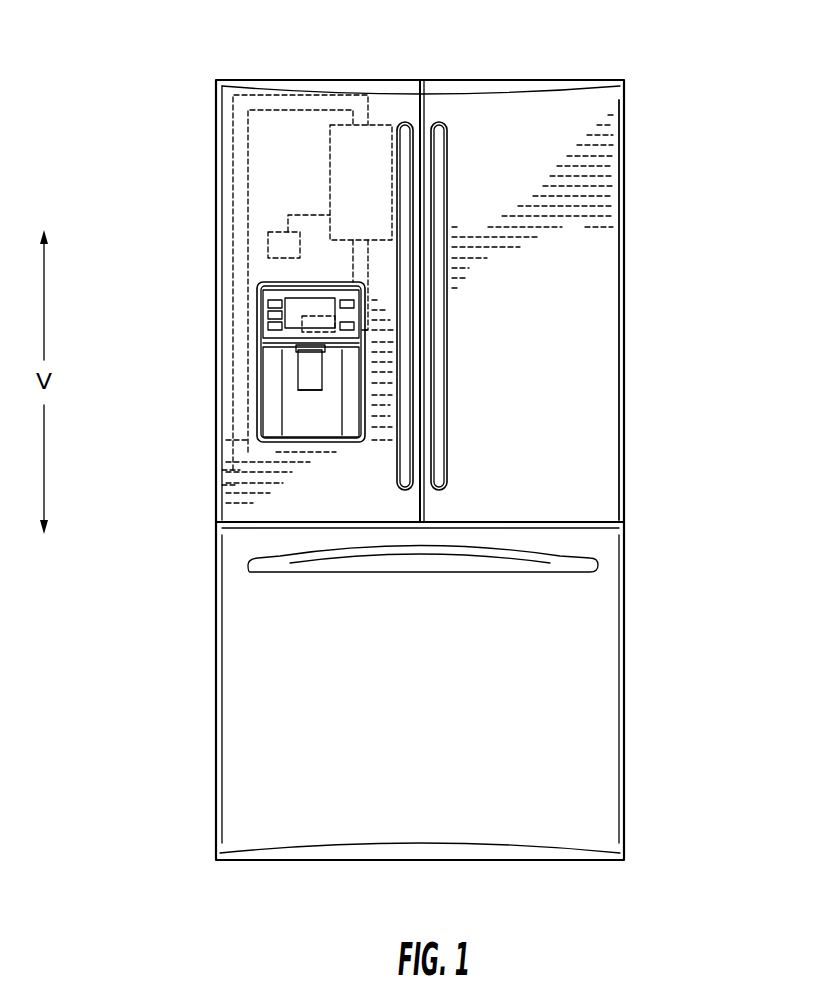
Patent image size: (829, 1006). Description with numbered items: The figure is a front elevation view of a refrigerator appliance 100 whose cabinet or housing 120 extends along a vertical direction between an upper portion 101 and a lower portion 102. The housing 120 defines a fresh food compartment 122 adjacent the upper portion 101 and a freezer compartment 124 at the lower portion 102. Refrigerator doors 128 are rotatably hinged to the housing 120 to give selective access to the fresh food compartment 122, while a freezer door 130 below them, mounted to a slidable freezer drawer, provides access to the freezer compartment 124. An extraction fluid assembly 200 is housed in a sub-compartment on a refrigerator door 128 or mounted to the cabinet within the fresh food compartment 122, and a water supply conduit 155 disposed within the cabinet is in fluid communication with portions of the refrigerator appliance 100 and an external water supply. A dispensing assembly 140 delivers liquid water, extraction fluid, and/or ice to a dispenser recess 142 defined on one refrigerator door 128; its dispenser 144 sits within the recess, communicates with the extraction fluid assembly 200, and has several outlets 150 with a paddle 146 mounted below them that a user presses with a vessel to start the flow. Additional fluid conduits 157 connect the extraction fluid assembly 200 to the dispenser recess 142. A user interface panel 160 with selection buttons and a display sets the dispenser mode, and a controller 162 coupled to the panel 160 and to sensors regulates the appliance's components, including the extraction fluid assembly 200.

The refrigerator appliance 100 is at (132, 99).
The upper portion 101 is at (627, 85).
The lower portion 102 is at (628, 845).
The housing 120 is at (624, 522).
The fresh food compartment 122 is at (566, 378).
The freezer compartment 124 is at (568, 660).
The refrigerator doors 128 is at (258, 157).
The freezer door 130 is at (287, 672).
The dispensing assembly 140 is at (240, 356).
The dispenser recess 142 is at (283, 393).
The dispenser 144 is at (272, 280).
The paddle 146 is at (310, 392).
The outlets 150 is at (314, 355).
The water supply conduit 155 is at (233, 108).
The additional fluid conduits 157 is at (368, 265).
The user interface panel 160 is at (326, 292).
The controller 162 is at (280, 232).
The extraction fluid assembly 200 is at (385, 123).